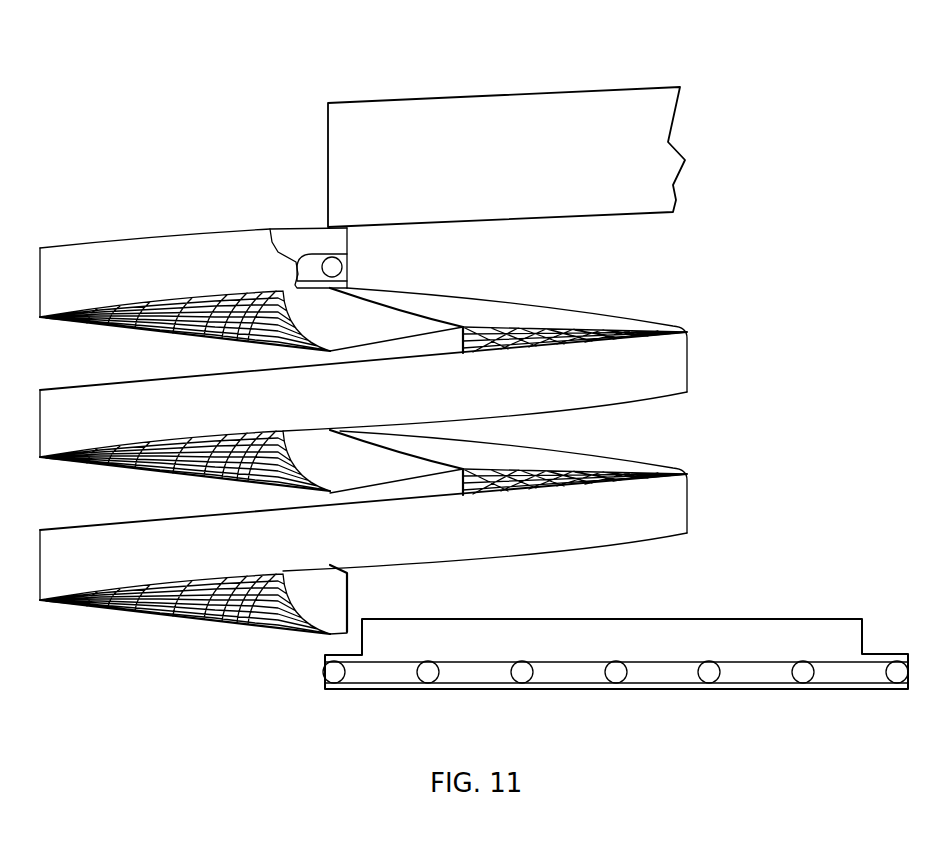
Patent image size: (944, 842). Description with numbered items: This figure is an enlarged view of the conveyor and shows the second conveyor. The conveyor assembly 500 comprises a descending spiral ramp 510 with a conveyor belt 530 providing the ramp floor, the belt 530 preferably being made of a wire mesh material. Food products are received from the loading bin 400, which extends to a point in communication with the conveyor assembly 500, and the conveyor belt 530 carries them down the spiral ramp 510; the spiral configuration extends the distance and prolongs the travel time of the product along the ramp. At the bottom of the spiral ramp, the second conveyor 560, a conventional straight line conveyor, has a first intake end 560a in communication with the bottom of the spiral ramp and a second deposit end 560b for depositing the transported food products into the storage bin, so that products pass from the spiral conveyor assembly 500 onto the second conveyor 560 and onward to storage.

The loading bin 400 is at (730, 52).
The conveyor assembly 500 is at (159, 126).
The descending spiral ramp 510 is at (679, 321).
The conveyor belt 530 is at (538, 340).
The second conveyor 560 is at (697, 597).
The first intake end 560a is at (380, 603).
The second deposit end 560b is at (868, 708).